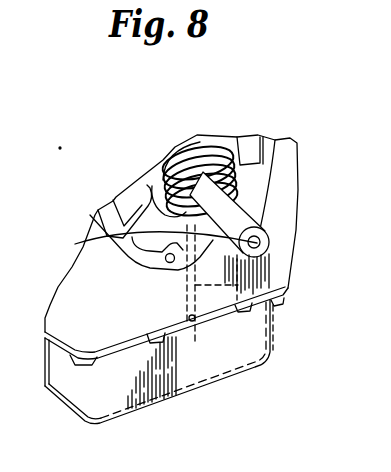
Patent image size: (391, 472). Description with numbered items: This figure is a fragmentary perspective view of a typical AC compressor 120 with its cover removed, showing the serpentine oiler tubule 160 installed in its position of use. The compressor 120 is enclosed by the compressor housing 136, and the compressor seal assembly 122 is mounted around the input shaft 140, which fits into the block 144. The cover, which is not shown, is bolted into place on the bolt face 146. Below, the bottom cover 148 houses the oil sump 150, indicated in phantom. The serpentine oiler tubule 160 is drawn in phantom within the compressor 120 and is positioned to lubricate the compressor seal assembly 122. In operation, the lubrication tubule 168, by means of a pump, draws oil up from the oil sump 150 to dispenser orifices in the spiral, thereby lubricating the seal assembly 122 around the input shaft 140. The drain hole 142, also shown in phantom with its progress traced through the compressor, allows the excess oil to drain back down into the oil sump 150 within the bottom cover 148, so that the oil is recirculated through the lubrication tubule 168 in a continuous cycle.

The compressor 120 is at (258, 118).
The compressor seal assembly 122 is at (160, 188).
The compressor housing 136 is at (297, 212).
The input shaft 140 is at (272, 241).
The drain hole 142 is at (75, 244).
The block 144 is at (147, 186).
The bolt face 146 is at (134, 262).
The bottom cover 148 is at (200, 389).
The oil sump 150 is at (63, 408).
The serpentine oiler tubule 160 is at (197, 140).
The lubrication tubule 168 is at (183, 337).